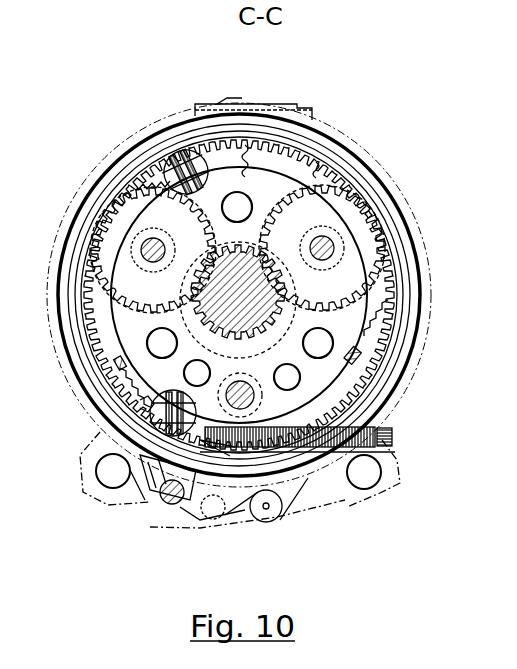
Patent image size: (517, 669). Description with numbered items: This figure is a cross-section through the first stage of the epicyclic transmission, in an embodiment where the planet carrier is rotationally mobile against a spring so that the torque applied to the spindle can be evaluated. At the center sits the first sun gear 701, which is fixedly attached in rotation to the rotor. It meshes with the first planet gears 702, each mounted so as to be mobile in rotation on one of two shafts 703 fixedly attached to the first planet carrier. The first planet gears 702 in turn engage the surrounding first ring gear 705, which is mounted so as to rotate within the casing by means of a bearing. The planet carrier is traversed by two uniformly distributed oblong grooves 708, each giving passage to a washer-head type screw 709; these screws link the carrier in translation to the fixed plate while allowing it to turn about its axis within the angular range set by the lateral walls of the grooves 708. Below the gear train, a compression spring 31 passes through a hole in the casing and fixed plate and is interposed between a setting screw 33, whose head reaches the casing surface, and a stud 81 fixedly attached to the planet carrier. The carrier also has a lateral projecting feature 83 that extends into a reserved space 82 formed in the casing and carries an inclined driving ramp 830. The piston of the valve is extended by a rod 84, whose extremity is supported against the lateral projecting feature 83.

The first sun gear 701 is at (240, 285).
The first planet gears 702 is at (157, 220).
The shafts 703 is at (150, 248).
The first ring gear 705 is at (385, 222).
The oblong grooves 708 is at (188, 152).
The washer-head type screw 709 is at (160, 177).
The setting screw 33 is at (387, 440).
The compression spring 31 is at (303, 440).
The stud 81 is at (217, 442).
The reserved space 82 is at (165, 500).
The lateral projecting feature 83 is at (148, 483).
The inclined driving ramp 830 is at (149, 485).
The rod 84 is at (180, 507).